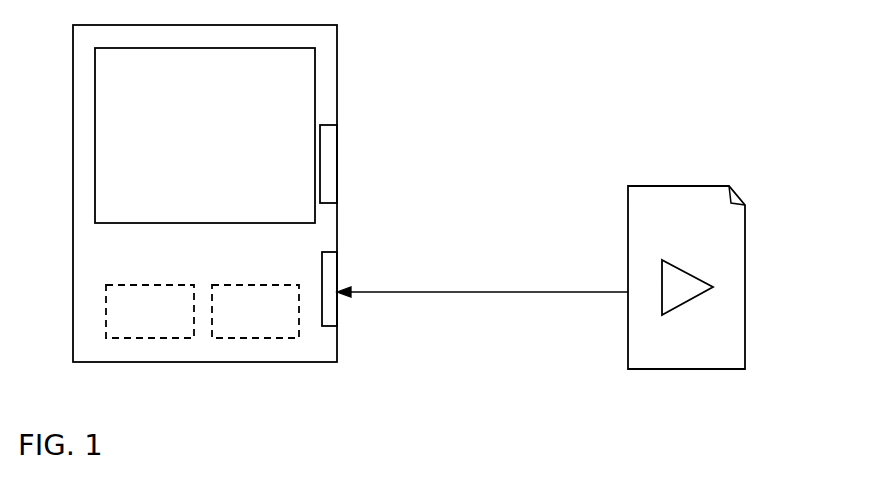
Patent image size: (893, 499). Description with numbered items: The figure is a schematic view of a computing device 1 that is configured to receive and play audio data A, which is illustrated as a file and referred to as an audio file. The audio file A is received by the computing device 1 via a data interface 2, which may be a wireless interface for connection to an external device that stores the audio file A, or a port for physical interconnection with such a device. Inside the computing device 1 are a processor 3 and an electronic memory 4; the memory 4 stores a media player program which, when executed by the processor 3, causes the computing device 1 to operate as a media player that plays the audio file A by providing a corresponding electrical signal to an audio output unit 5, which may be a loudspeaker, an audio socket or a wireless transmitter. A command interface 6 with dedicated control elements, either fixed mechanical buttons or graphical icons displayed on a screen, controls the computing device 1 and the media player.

The computing device 1 is at (338, 90).
The data interface 2 is at (331, 268).
The processor 3 is at (159, 322).
The electronic memory 4 is at (261, 322).
The audio output unit 5 is at (331, 183).
The command interface 6 is at (203, 142).
The audio data A is at (745, 237).